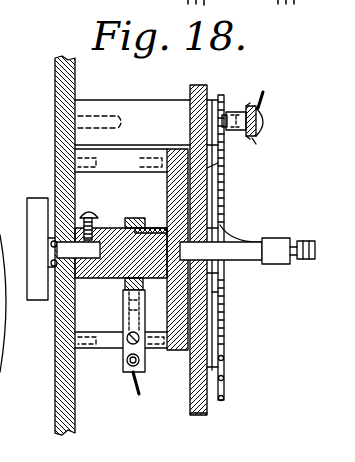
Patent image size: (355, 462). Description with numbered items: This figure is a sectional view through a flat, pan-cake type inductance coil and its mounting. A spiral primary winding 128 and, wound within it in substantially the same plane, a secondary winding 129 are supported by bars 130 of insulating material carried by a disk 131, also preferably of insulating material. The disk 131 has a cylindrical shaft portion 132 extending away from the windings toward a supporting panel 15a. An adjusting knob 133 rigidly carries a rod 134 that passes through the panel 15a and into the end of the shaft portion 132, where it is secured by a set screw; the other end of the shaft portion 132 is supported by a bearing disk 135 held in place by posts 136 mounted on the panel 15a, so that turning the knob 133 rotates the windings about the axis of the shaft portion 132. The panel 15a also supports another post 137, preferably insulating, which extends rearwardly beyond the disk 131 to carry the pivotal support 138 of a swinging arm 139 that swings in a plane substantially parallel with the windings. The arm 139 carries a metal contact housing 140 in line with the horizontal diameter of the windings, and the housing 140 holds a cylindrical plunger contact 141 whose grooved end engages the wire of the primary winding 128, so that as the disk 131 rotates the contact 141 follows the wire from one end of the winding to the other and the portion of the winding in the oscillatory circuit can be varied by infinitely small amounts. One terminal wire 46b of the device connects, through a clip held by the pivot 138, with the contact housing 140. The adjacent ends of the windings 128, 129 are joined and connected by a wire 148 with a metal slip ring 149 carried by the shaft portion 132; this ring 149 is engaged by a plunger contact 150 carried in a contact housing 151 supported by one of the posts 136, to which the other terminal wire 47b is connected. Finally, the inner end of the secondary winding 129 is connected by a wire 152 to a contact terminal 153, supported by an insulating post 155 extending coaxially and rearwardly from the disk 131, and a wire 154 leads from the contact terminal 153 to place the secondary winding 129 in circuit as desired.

The supporting panel 15a is at (58, 60).
The adjusting knob 133 is at (31, 198).
The rod 134 is at (55, 294).
The posts 136 is at (100, 158).
The bearing disk 135 is at (175, 150).
The post 137 is at (172, 107).
The cylindrical shaft portion 132 is at (91, 214).
The contact ring 149 is at (138, 207).
The plunger contact 150 is at (123, 289).
The contact housing 151 is at (127, 350).
The terminal wire 47b is at (139, 394).
The secondary winding 129 is at (223, 332).
The primary winding 128 is at (224, 386).
The disk 131 is at (207, 413).
The bars 130 is at (213, 292).
The plunger contact 141 is at (229, 112).
The contact housing 140 is at (238, 112).
The pivotal support 138 is at (268, 118).
The terminal wire 46b is at (266, 95).
The swinging arm 139 is at (253, 141).
The wire 148 is at (218, 163).
The wire 152 is at (230, 225).
The post 155 is at (238, 244).
The contact terminal 153 is at (279, 243).
The wire 154 is at (307, 262).